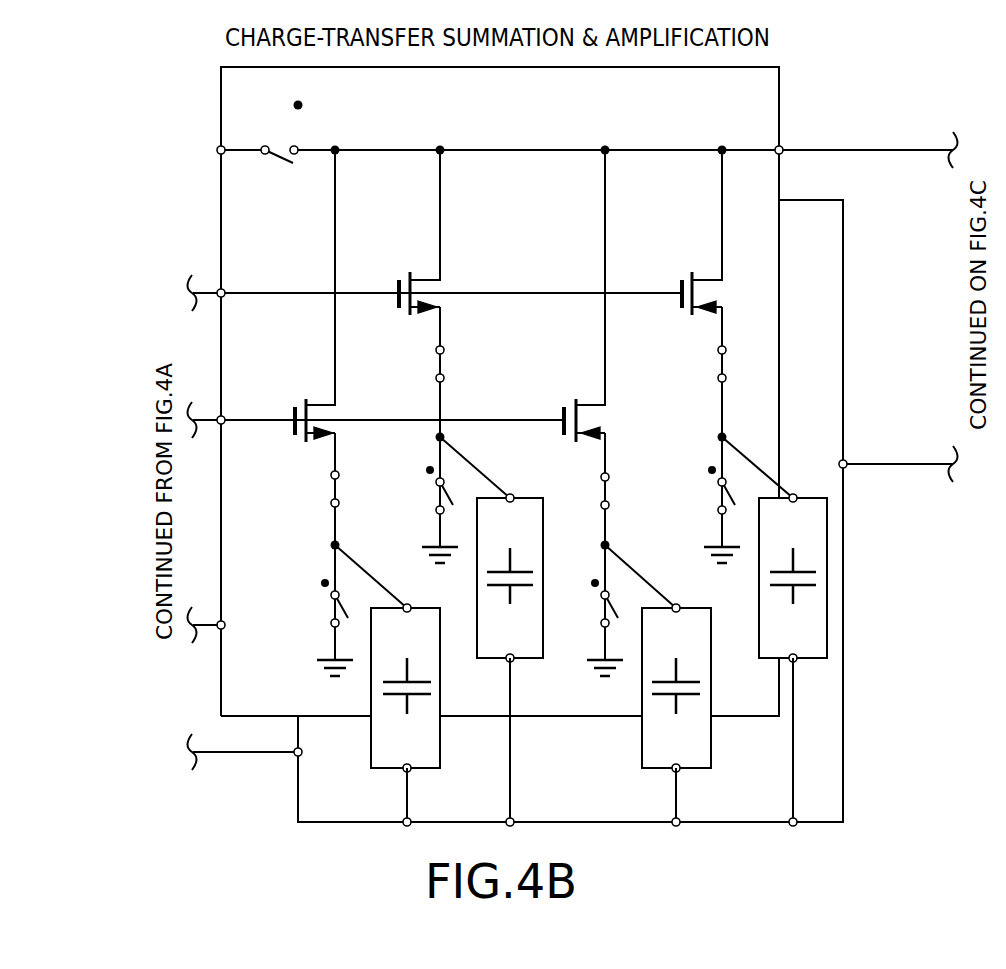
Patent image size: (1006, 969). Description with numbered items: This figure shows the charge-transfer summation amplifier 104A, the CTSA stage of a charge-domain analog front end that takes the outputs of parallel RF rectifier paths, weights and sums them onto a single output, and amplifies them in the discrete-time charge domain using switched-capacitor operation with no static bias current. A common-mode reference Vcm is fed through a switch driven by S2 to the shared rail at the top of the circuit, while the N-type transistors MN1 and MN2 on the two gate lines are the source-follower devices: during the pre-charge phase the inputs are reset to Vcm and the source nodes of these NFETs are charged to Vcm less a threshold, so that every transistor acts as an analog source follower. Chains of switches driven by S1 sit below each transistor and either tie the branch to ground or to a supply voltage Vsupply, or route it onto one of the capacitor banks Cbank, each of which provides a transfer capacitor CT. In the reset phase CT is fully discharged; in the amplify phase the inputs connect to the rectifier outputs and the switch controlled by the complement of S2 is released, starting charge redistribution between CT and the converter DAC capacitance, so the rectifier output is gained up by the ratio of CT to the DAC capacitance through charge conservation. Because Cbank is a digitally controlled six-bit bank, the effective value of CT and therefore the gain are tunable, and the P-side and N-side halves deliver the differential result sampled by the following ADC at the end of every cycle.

The charge-transfer summation amplifier (CTSA) 104A is at (779, 100).
The S1 clock signal S1 is at (543, 486).
The S2 clock signal S2 is at (282, 132).
The NFET transistor MN1 is at (548, 277).
The NFET transistor MN2 is at (437, 403).
The capacitor bank Cbank is at (599, 633).
The transfer capacitor CT is at (599, 649).
The common-mode voltage Vcm is at (561, 153).
The supply voltage Vsupply is at (651, 637).